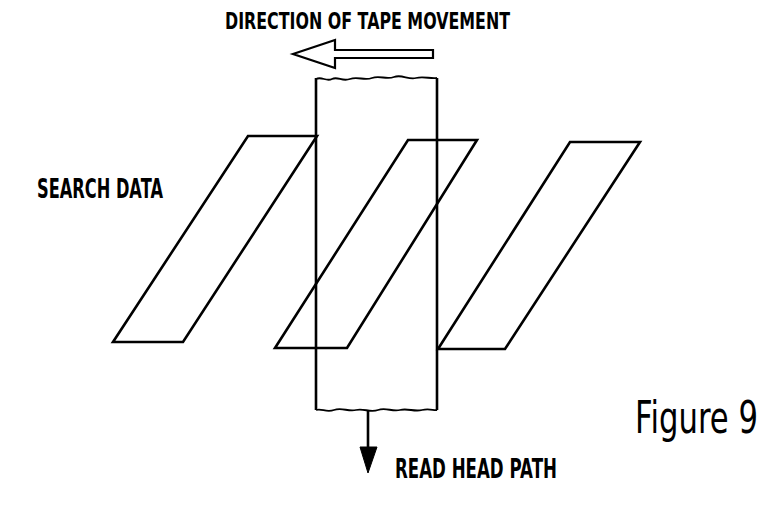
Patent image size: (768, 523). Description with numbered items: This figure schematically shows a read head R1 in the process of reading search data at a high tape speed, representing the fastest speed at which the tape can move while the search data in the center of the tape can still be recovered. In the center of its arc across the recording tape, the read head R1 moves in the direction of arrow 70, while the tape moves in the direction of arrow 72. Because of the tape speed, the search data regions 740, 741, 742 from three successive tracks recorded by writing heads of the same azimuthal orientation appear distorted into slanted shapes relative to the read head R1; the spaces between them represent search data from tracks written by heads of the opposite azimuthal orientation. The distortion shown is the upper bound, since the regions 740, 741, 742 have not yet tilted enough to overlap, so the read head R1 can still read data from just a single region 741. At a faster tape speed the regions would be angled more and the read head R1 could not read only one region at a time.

The arrow 72 is at (433, 53).
The read head R1 is at (437, 372).
The search data region 742 is at (190, 312).
The search data region 741 is at (458, 163).
The search data region 740 is at (520, 303).
The arrow 70 is at (370, 432).